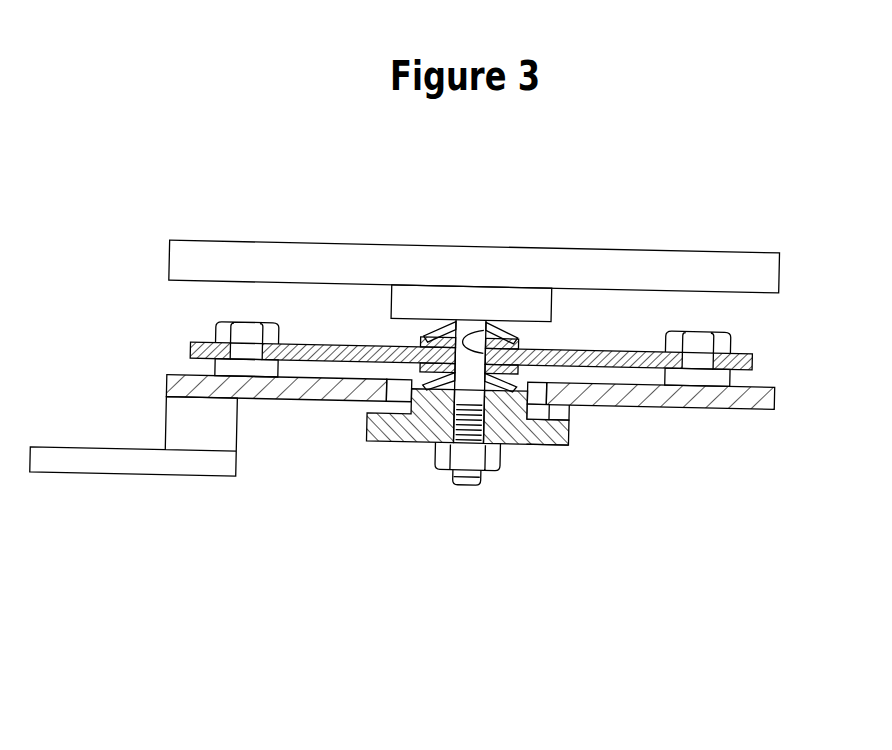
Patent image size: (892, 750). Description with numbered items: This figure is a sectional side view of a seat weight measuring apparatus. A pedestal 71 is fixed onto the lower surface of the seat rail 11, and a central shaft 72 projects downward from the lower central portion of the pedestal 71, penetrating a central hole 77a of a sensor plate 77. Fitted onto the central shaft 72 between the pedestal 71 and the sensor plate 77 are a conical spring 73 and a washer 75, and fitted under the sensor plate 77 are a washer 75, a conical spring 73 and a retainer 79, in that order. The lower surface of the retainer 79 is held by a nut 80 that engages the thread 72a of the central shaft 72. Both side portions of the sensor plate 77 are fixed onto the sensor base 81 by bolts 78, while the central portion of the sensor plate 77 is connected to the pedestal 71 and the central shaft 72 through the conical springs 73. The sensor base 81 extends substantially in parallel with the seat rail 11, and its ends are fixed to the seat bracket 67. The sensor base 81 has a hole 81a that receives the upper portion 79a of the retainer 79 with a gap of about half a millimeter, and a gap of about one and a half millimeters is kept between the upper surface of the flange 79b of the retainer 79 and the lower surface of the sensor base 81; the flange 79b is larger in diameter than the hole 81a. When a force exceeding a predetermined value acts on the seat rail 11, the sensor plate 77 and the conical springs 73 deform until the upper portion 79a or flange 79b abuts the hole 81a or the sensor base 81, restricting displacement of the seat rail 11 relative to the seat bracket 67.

The seat rail 11 is at (447, 257).
The seat bracket 67 is at (185, 428).
The pedestal 71 is at (390, 305).
The central shaft 72 is at (470, 322).
The thread 72a is at (468, 485).
The conical spring 73 is at (418, 326).
The washer 75 is at (418, 366).
The sensor plate 77 is at (190, 343).
The central hole 77a is at (488, 334).
The bolts 78 is at (222, 324).
The retainer 79 is at (413, 447).
The upper portion 79a is at (530, 447).
The flange 79b is at (562, 412).
The nut 80 is at (490, 463).
The sensor base 81 is at (255, 398).
The hole 81a is at (566, 425).